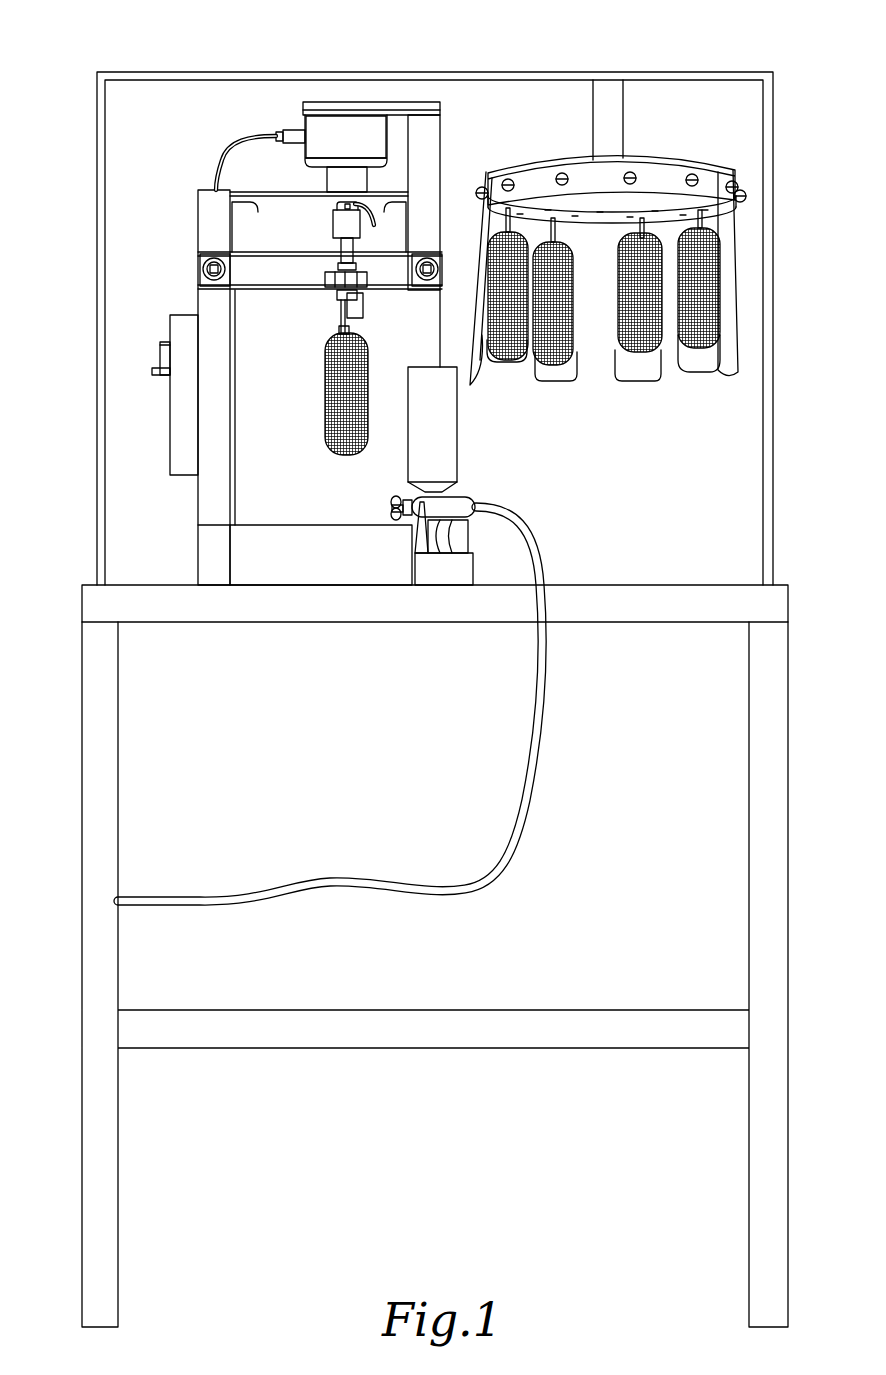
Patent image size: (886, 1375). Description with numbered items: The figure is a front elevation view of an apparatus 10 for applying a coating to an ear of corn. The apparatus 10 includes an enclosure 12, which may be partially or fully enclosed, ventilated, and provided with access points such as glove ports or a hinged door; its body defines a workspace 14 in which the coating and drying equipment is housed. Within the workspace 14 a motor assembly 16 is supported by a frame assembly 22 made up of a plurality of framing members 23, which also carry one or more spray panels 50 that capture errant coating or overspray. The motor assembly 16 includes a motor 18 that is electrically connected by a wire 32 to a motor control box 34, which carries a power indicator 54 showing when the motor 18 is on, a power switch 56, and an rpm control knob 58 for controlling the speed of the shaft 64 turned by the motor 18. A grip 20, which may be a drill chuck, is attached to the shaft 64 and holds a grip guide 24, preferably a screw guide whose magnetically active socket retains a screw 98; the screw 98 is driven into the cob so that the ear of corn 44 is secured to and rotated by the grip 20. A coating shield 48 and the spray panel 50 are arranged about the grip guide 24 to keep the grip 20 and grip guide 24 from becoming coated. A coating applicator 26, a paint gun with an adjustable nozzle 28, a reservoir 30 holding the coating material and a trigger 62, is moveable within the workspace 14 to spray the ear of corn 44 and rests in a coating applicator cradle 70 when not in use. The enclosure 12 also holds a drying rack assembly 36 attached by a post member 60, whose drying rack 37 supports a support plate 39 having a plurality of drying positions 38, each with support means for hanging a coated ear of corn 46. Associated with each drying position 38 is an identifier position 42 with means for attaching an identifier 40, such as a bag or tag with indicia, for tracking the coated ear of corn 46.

The apparatus 10 is at (727, 40).
The enclosure 12 is at (97, 130).
The workspace 14 is at (735, 488).
The motor assembly 16 is at (300, 106).
The motor 18 is at (320, 148).
The grip 20 is at (335, 225).
The frame assembly 22 is at (195, 525).
The framing members 23 is at (425, 133).
The grip guide 24 is at (341, 302).
The coating applicator 26 is at (476, 490).
The adjustable nozzle 28 is at (391, 507).
The reservoir 30 is at (450, 435).
The wire 32 is at (215, 160).
The motor control box 34 is at (165, 438).
The drying rack assembly 36 is at (608, 243).
The drying rack 37 is at (592, 165).
The drying positions 38 is at (555, 227).
The support plate 39 is at (698, 228).
The identifier 40 is at (470, 330).
The identifier position 42 is at (506, 181).
The ear of corn 44 is at (330, 385).
The coated ear of corn 46 is at (555, 381).
The coating shield 48 is at (364, 308).
The spray panel 50 is at (302, 525).
The power indicator 54 is at (160, 350).
The power switch 56 is at (160, 372).
The rpm control knob 58 is at (150, 345).
The post member 60 is at (612, 110).
The trigger 62 is at (440, 535).
The shaft 64 is at (378, 223).
The coating applicator cradle 70 is at (415, 557).
The screw 98 is at (339, 329).